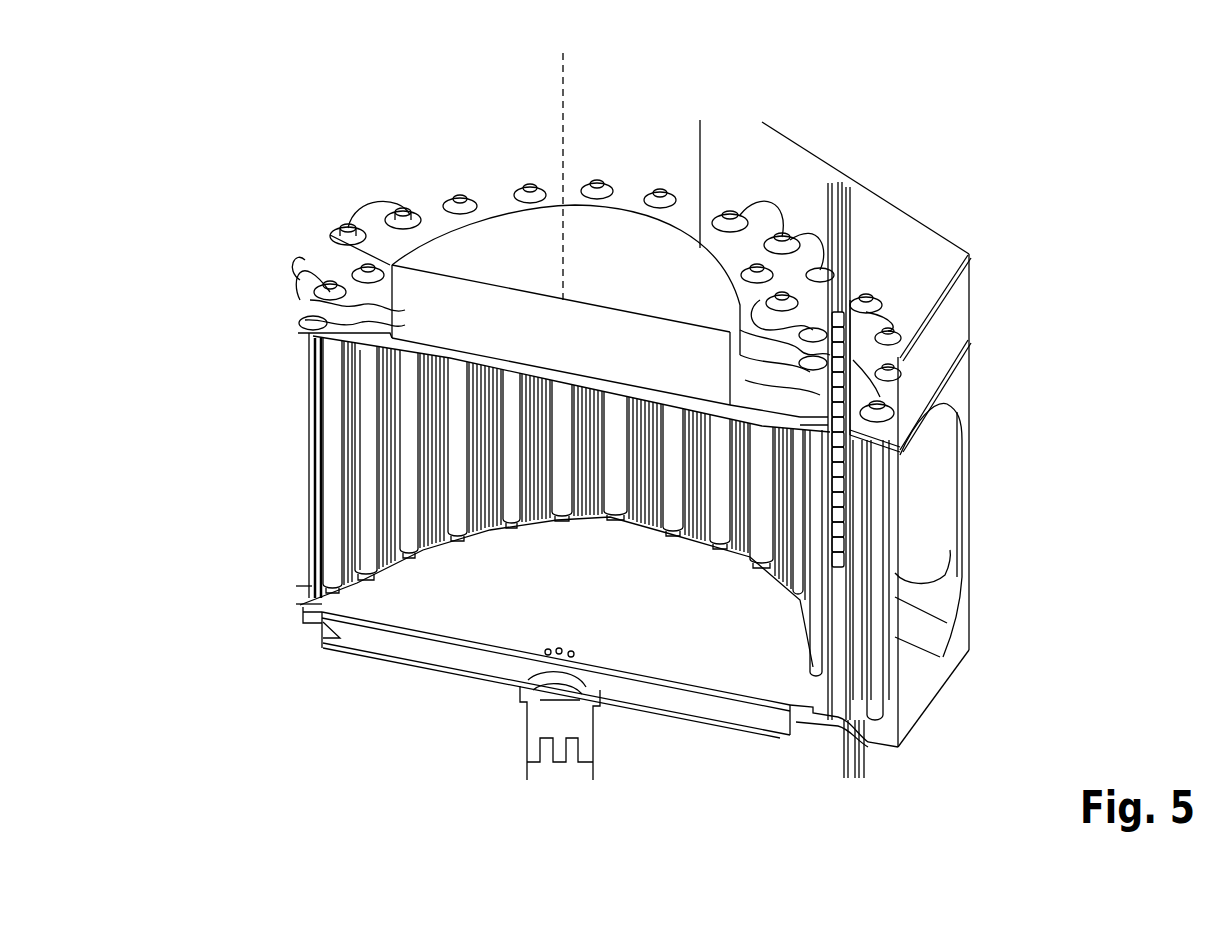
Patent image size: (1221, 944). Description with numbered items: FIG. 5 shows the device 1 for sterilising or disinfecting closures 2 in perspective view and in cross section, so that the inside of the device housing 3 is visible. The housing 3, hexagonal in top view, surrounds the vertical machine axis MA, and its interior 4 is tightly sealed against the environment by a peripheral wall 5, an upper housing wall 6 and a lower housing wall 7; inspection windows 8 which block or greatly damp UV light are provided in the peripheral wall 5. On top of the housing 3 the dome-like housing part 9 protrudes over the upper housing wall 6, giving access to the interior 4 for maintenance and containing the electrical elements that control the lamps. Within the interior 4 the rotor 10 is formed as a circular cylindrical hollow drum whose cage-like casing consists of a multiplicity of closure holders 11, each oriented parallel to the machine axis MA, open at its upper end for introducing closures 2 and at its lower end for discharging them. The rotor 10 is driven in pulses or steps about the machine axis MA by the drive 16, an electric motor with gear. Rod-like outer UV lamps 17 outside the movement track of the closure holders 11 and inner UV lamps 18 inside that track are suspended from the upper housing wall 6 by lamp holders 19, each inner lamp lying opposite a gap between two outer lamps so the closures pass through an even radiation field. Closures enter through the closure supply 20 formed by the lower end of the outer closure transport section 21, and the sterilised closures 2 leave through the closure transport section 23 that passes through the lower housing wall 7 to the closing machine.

The device 1 is at (257, 172).
The closures 2 is at (349, 368).
The device housing 3 is at (984, 304).
The interior 4 is at (600, 589).
The peripheral wall 5 is at (956, 639).
The upper housing wall 6 is at (965, 352).
The lower housing wall 7 is at (340, 645).
The inspection windows 8 is at (963, 585).
The housing part 9 is at (473, 237).
The rotor 10 is at (306, 483).
The closure holders 11 is at (443, 517).
The drive 16 is at (577, 787).
The outer UV lamps 17 is at (878, 625).
The inner UV lamps 18 is at (363, 513).
The lamp holders 19 is at (392, 207).
The closure supply 20 is at (857, 445).
The outer closure transport section 21 is at (845, 213).
The closure transport section 23 is at (863, 775).
The machine axis MA is at (563, 145).